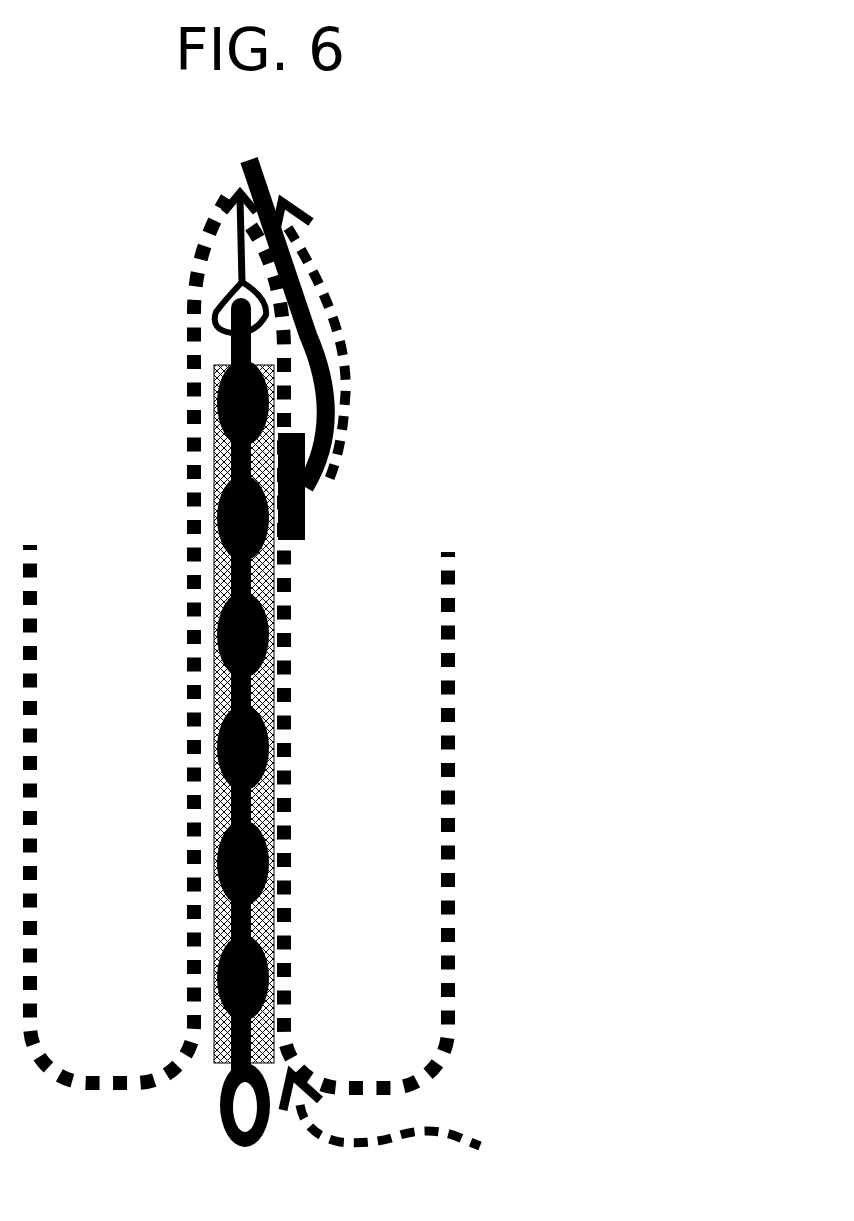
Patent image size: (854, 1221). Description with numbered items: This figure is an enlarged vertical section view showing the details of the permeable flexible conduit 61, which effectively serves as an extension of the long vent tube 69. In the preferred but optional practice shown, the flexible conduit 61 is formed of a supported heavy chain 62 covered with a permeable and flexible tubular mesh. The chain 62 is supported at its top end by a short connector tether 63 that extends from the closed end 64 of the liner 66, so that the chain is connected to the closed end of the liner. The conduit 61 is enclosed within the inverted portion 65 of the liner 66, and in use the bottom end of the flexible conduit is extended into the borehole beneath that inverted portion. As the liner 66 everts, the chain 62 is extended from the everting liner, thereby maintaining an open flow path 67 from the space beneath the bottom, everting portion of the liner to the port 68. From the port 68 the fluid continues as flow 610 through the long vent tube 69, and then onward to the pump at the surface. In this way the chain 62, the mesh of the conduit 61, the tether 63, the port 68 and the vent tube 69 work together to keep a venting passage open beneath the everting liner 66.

The flexible conduit 61 is at (255, 697).
The chain 62 is at (218, 1118).
The connector tether 63 is at (222, 290).
The closed end 64 is at (223, 212).
The inverted portion 65 is at (185, 700).
The liner 66 is at (330, 1073).
The flow path 67 is at (393, 1140).
The port 68 is at (304, 488).
The long vent tube 69 is at (258, 172).
The flow 610 is at (348, 358).